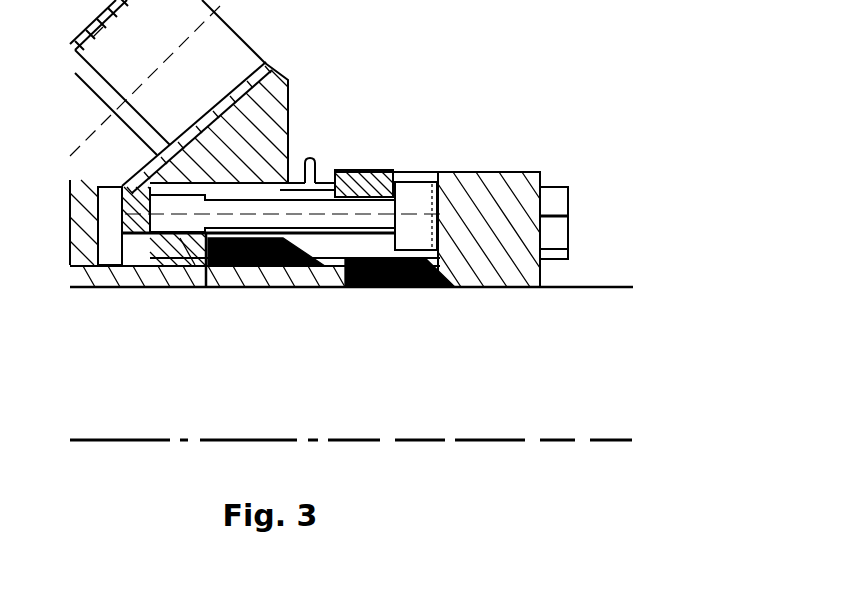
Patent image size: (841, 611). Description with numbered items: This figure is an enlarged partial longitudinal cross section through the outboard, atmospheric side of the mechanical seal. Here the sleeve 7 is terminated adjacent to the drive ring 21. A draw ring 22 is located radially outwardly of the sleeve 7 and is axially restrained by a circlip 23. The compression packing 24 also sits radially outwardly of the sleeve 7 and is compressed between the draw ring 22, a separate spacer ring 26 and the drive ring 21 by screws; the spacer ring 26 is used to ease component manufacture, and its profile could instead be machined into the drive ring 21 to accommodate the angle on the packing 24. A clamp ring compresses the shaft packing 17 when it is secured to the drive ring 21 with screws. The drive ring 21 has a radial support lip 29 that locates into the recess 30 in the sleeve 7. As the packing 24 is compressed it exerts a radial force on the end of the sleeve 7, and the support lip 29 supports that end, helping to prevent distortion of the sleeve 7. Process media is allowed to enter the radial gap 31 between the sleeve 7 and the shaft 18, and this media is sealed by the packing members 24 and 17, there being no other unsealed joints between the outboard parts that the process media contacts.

The sleeve 7 is at (97, 287).
The shaft packing 17 is at (407, 287).
The shaft 18 is at (563, 370).
The drive ring 21 is at (405, 170).
The draw ring 22 is at (160, 264).
The circlip 23 is at (212, 287).
The compression packing 24 is at (273, 287).
The spacer ring 26 is at (380, 182).
The radial support lip 29 is at (302, 287).
The recess 30 is at (340, 172).
The radial gap 31 is at (188, 280).